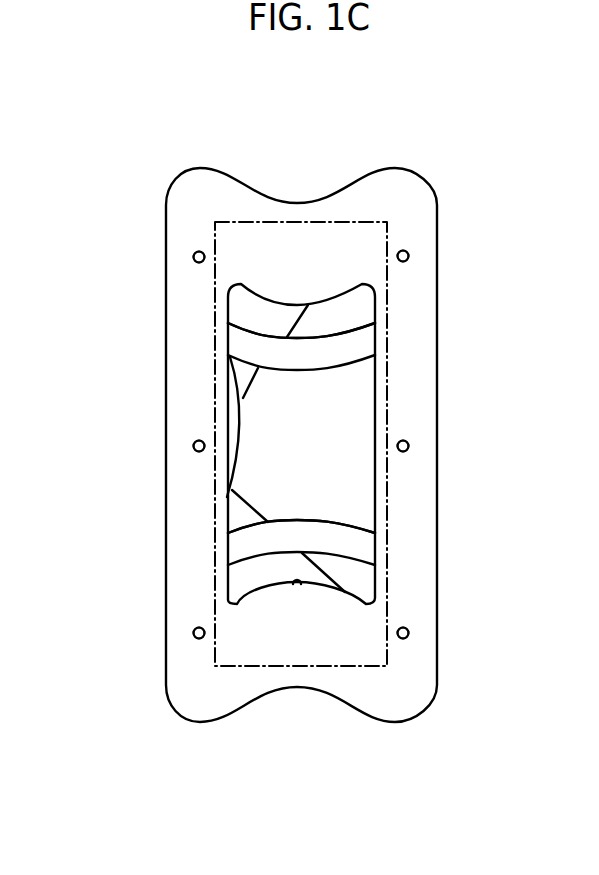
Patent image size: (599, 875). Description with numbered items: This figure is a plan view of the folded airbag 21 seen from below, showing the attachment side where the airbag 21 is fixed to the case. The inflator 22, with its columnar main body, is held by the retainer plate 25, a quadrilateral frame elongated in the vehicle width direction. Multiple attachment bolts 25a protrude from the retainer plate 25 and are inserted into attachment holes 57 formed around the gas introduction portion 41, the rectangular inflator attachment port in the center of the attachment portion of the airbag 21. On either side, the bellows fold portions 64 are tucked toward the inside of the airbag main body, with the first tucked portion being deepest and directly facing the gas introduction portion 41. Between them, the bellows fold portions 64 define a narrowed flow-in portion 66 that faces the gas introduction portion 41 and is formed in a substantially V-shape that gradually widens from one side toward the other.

The airbag 21 is at (437, 330).
The inflator 22 is at (379, 222).
The retainer plate 25 is at (365, 550).
The attachment bolts 25a is at (193, 259).
The gas introduction portion 41 is at (296, 587).
The attachment holes 57 is at (195, 253).
The bellows fold portions 64 is at (238, 307).
The flow-in portion 66 is at (347, 417).